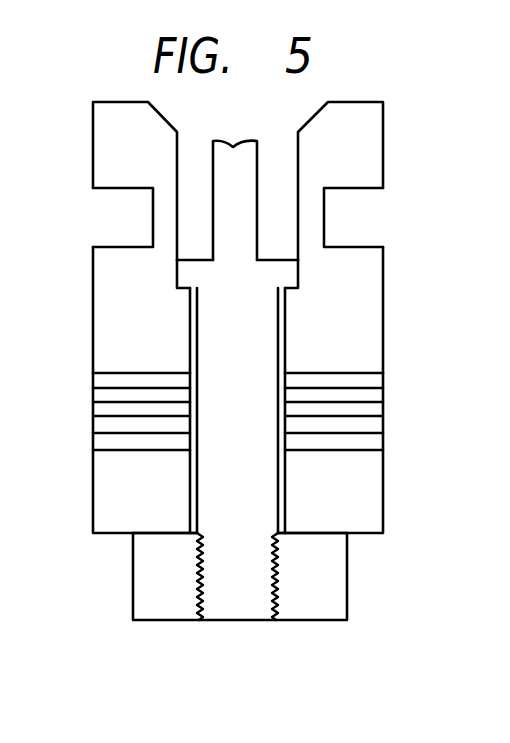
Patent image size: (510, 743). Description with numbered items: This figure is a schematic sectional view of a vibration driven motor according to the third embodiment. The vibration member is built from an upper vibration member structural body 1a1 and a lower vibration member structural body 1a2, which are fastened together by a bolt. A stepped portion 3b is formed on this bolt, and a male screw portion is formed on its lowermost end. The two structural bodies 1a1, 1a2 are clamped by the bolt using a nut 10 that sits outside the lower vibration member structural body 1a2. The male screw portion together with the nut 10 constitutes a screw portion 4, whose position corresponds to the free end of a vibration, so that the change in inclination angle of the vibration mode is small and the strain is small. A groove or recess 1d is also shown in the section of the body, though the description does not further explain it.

The upper vibration member structural body 1a1 is at (352, 327).
The lower vibration member structural body 1a2 is at (358, 508).
The annular groove of body 1d is at (340, 233).
The stepped portion 3b is at (180, 270).
The nut 10 is at (327, 605).
The screw portion 4 is at (278, 603).